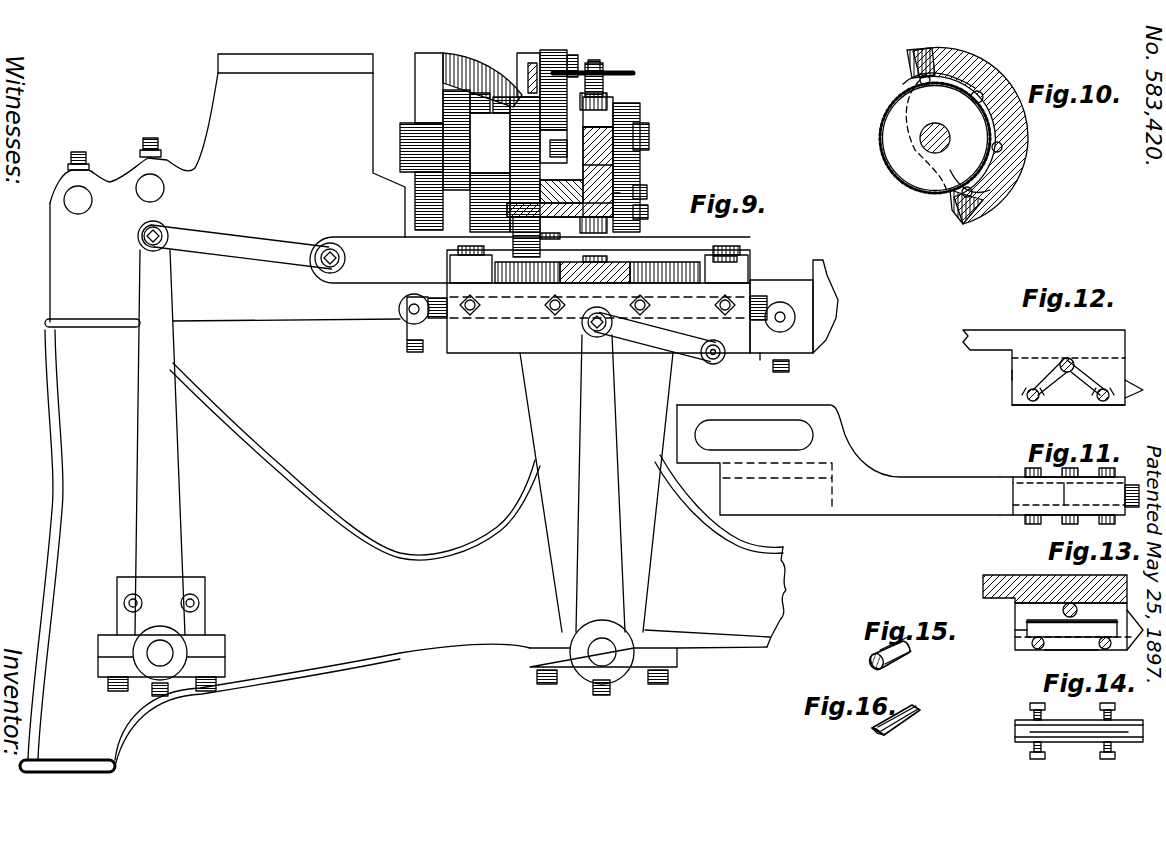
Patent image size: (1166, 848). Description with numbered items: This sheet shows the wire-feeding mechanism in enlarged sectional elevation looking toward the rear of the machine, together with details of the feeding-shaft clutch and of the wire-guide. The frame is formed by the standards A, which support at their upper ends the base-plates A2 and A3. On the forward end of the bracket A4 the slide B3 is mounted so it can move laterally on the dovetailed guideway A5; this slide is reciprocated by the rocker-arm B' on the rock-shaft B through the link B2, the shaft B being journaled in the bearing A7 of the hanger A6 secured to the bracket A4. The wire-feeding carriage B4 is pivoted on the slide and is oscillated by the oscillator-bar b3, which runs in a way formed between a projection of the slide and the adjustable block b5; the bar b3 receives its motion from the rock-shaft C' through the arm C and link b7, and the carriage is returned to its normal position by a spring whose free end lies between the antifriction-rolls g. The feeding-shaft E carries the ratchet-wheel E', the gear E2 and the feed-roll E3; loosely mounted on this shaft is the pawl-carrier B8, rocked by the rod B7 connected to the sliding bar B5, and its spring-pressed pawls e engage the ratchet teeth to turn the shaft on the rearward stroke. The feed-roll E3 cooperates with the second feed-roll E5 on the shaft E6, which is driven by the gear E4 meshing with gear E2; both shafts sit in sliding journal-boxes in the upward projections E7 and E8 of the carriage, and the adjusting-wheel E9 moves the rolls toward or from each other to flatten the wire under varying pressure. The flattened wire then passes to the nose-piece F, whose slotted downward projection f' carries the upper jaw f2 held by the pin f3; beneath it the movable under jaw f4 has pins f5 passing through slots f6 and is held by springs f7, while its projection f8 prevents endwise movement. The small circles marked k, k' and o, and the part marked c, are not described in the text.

In FIG. 9, the standard A is at (303, 600).
In FIG. 9, the base-plate A2 is at (228, 182).
In FIG. 9, the base-plate A3 is at (832, 289).
In FIG. 9, the bracket A4 is at (755, 355).
In FIG. 9, the dovetailed guideway A5 is at (412, 308).
In FIG. 9, the hanger A6 is at (620, 447).
In FIG. 9, the bearing A7 is at (624, 672).
In FIG. 9, the rock-shaft B is at (596, 661).
In FIG. 9, the rocker-arm B' is at (600, 469).
In FIG. 9, the link B2 is at (660, 338).
In FIG. 9, the slide B3 is at (686, 232).
In FIG. 9, the wire-feeding carriage B4 is at (593, 173).
In FIG. 9, the sliding bar B5 is at (613, 193).
In FIG. 9, the rod B7 is at (534, 70).
In FIG. 9, the pawl-carrier B8 is at (420, 57).
In FIG. 10, the pawl-carrier B8 is at (978, 135).
In FIG. 9, the arm C is at (160, 428).
In FIG. 9, the rock-shaft C' is at (161, 650).
In FIG. 9, the shaft E is at (650, 134).
In FIG. 10, the shaft E is at (922, 145).
In FIG. 9, the ratchet-wheel E' is at (429, 139).
In FIG. 9, the gear E2 is at (516, 95).
In FIG. 9, the feed-roll E3 is at (630, 117).
In FIG. 9, the gear E4 is at (522, 255).
In FIG. 9, the feed-roll E5 is at (648, 198).
In FIG. 9, the shaft E6 is at (648, 213).
In FIG. 9, the upward projection E7 is at (490, 162).
In FIG. 9, the upward projection E8 is at (600, 118).
In FIG. 9, the adjusting-wheel E9 is at (614, 73).
In FIG. 12, the nose-piece F is at (982, 335).
In FIG. 11, the nose-piece F is at (1013, 517).
In FIG. 13, the nose-piece F is at (985, 587).
In FIG. 9, the oscillator-bar b3 is at (530, 260).
In FIG. 9, the adjustable block b5 is at (455, 262).
In FIG. 9, the link b7 is at (243, 249).
In FIG. 9, the block c is at (560, 172).
In FIG. 10, the spring-pressed pawl e is at (918, 80).
In FIG. 12, the slotted downward projection f' is at (1007, 375).
In FIG. 12, the upper jaw f2 is at (1135, 385).
In FIG. 11, the upper jaw f2 is at (1138, 488).
In FIG. 13, the upper jaw f2 is at (1072, 620).
In FIG. 12, the pin f3 is at (1070, 360).
In FIG. 11, the pin f3 is at (1070, 510).
In FIG. 13, the pin f3 is at (1068, 604).
In FIG. 12, the under jaw f4 is at (1122, 400).
In FIG. 13, the under jaw f4 is at (1071, 644).
In FIG. 14, the under jaw f4 is at (1015, 727).
In FIG. 12, the pin f5 is at (1028, 400).
In FIG. 11, the pin f5 is at (1030, 468).
In FIG. 13, the pin f5 is at (1035, 650).
In FIG. 14, the pin f5 is at (1030, 704).
In FIG. 12, the slot f6 is at (1035, 404).
In FIG. 13, the slot f6 is at (1100, 633).
In FIG. 12, the spring f7 is at (1069, 377).
In FIG. 11, the spring f7 is at (1090, 468).
In FIG. 14, the projection f8 is at (1072, 722).
In FIG. 9, the antifriction-roll g is at (586, 225).
In FIG. 13, the antifriction-roll g is at (1018, 636).
In FIG. 9, the hole k is at (150, 188).
In FIG. 9, the hole k' is at (78, 200).
In FIG. 9, the opening o is at (408, 318).